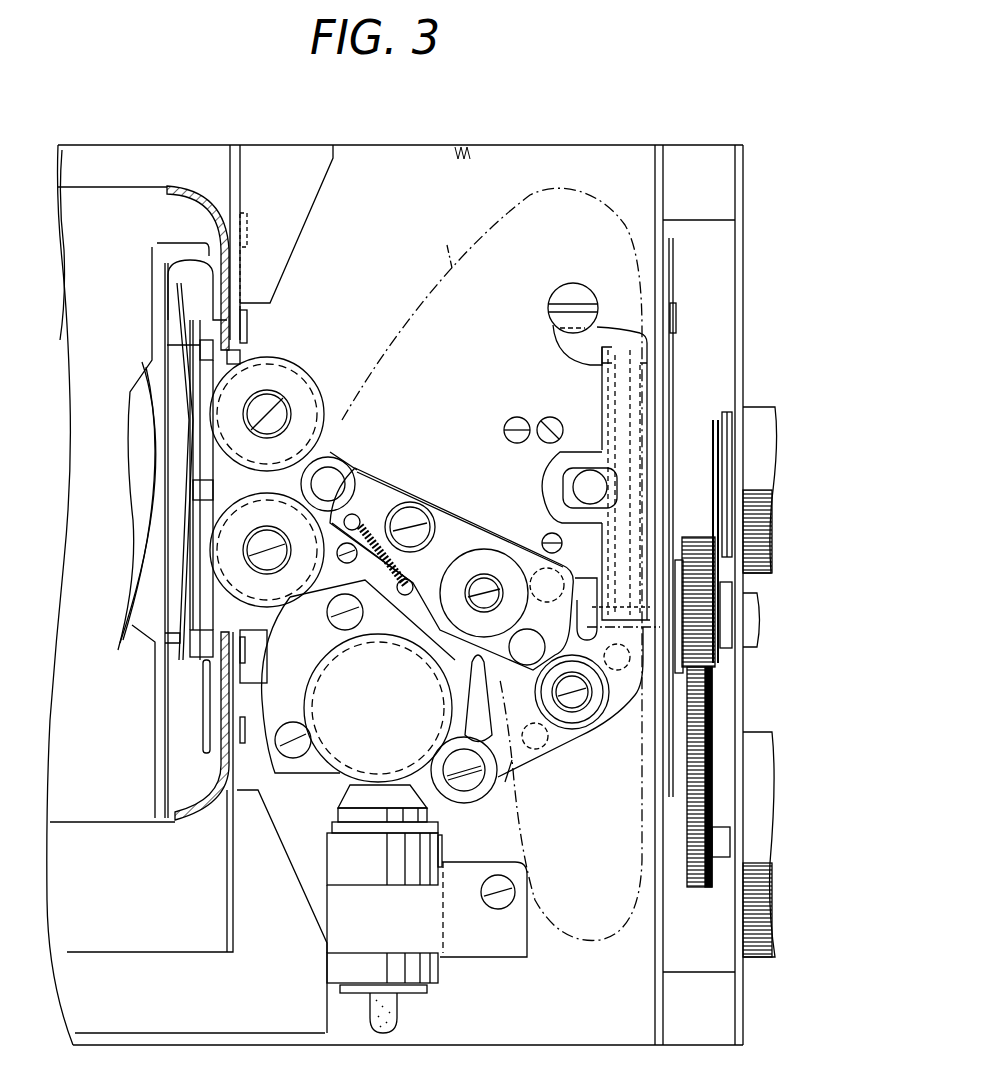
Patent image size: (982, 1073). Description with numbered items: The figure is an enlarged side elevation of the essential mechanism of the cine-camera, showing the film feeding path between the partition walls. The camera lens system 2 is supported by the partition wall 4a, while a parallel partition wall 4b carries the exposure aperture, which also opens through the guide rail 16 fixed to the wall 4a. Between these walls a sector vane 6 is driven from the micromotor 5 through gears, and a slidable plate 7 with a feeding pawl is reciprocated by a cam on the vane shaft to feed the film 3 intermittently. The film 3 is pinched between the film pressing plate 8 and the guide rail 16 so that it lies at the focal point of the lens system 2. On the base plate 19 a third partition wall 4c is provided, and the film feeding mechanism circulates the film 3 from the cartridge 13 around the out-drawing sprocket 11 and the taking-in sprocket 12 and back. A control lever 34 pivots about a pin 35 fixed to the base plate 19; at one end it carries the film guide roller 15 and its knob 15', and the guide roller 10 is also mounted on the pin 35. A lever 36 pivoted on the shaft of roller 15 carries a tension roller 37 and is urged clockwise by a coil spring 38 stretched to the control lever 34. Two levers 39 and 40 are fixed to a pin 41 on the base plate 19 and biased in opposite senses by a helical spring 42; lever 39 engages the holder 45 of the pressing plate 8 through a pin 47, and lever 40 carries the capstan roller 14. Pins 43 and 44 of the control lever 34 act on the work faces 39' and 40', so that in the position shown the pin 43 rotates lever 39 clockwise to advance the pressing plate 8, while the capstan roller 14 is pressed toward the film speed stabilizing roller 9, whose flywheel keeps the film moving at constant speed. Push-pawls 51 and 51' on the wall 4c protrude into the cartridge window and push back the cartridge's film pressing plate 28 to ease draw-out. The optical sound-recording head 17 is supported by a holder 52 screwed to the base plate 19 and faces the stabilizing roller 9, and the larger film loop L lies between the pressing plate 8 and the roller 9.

The camera lens system 2 is at (763, 460).
The film 3 is at (445, 244).
The partition wall 4a is at (738, 340).
The partition wall 4b is at (658, 287).
The partition wall 4c is at (227, 900).
The micromotor 5 is at (762, 843).
The sector vane 6 is at (713, 437).
The slidable plate 7 is at (667, 402).
The film pressing plate 8 is at (640, 400).
The film speed stabilizing roller 9 is at (353, 750).
The guide roller 10 is at (496, 547).
The film out-drawing sprocket 11 is at (303, 368).
The film taking-in sprocket 12 is at (250, 513).
The film cartridge 13 is at (103, 812).
The capstan roller 14 is at (483, 797).
The film guide roller 15 is at (331, 466).
The knob 15' is at (367, 449).
The guide rail 16 is at (650, 380).
The optical sound-recording head 17 is at (425, 980).
The base plate 19 is at (438, 158).
The film pressing plate of the cartridge 28 is at (197, 333).
The control lever 34 is at (433, 507).
The pin 35 is at (485, 573).
The lever 36 is at (373, 490).
The tension roller 37 is at (412, 505).
The coil spring 38 is at (457, 533).
The lever 39 is at (570, 702).
The work face 39' is at (536, 616).
The lever 40 is at (506, 786).
The work face 40' is at (487, 698).
The pin 41 is at (565, 705).
The helical spring 42 is at (572, 729).
The pin 43 is at (568, 545).
The pin 44 is at (528, 650).
The holder 45 is at (555, 480).
The pin 47 is at (588, 478).
The push-pawl 51 is at (256, 288).
The push-pawl 51' is at (279, 682).
The holder 52 is at (503, 938).
The loop L is at (597, 947).